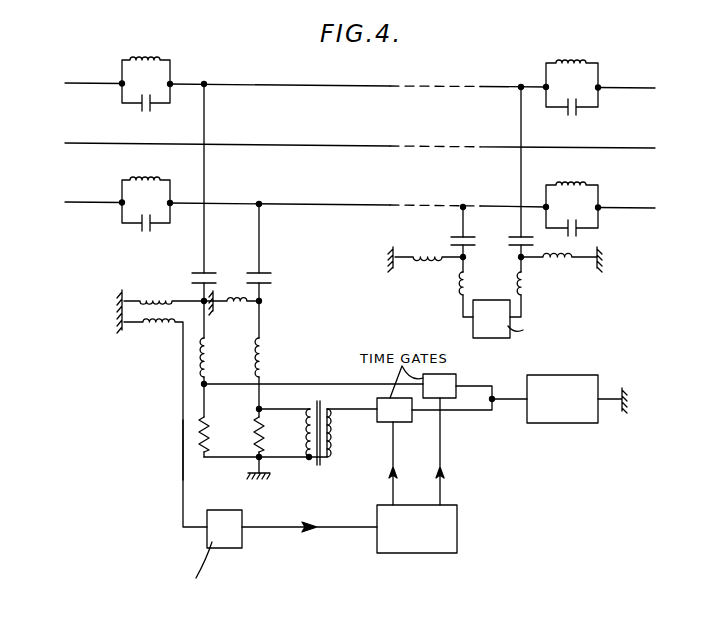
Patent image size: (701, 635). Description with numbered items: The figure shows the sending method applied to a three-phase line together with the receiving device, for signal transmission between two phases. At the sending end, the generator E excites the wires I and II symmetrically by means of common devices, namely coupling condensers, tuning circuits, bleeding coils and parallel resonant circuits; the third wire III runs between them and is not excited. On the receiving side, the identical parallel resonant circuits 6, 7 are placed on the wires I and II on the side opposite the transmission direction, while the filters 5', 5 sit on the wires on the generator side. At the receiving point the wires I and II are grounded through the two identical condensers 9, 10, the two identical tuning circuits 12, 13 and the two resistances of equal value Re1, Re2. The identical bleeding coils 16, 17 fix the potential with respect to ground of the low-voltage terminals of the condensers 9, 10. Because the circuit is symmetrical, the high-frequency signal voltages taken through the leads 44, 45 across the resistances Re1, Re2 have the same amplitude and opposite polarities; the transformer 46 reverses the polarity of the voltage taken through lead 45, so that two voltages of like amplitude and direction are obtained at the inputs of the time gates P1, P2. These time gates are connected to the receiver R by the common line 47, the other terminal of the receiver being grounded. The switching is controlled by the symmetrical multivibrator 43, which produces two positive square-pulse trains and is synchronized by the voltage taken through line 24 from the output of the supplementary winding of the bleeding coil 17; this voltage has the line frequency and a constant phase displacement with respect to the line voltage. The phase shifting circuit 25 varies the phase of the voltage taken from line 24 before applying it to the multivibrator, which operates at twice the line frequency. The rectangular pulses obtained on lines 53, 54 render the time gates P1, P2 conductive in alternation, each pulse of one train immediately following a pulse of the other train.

The wire I is at (204, 84).
The wire II is at (204, 204).
The third line III is at (204, 144).
The filter 5 is at (572, 209).
The filter 5' is at (572, 87).
The parallel resonant circuit 6 is at (128, 83).
The parallel resonant circuit 7 is at (128, 202).
The condenser 9 is at (212, 276).
The condenser 10 is at (268, 276).
The tuning circuit 12 is at (207, 353).
The tuning circuit 13 is at (263, 353).
The bleeding coil 16 is at (233, 296).
The bleeding coil 17 is at (153, 297).
The line 24 is at (182, 447).
The phase shifting circuit 25 is at (235, 548).
The symmetrical multivibrator 43 is at (427, 557).
The lead 44 is at (226, 384).
The lead 45 is at (281, 409).
The transformer 46 is at (314, 411).
The common line 47 is at (514, 402).
The pulse line 53 is at (443, 468).
The pulse line 54 is at (395, 468).
The resistance Re1 is at (229, 437).
The resistance Re2 is at (272, 448).
The time gate P1 is at (439, 386).
The time gate P2 is at (434, 404).
The receiver R is at (577, 411).
The generator E is at (501, 272).